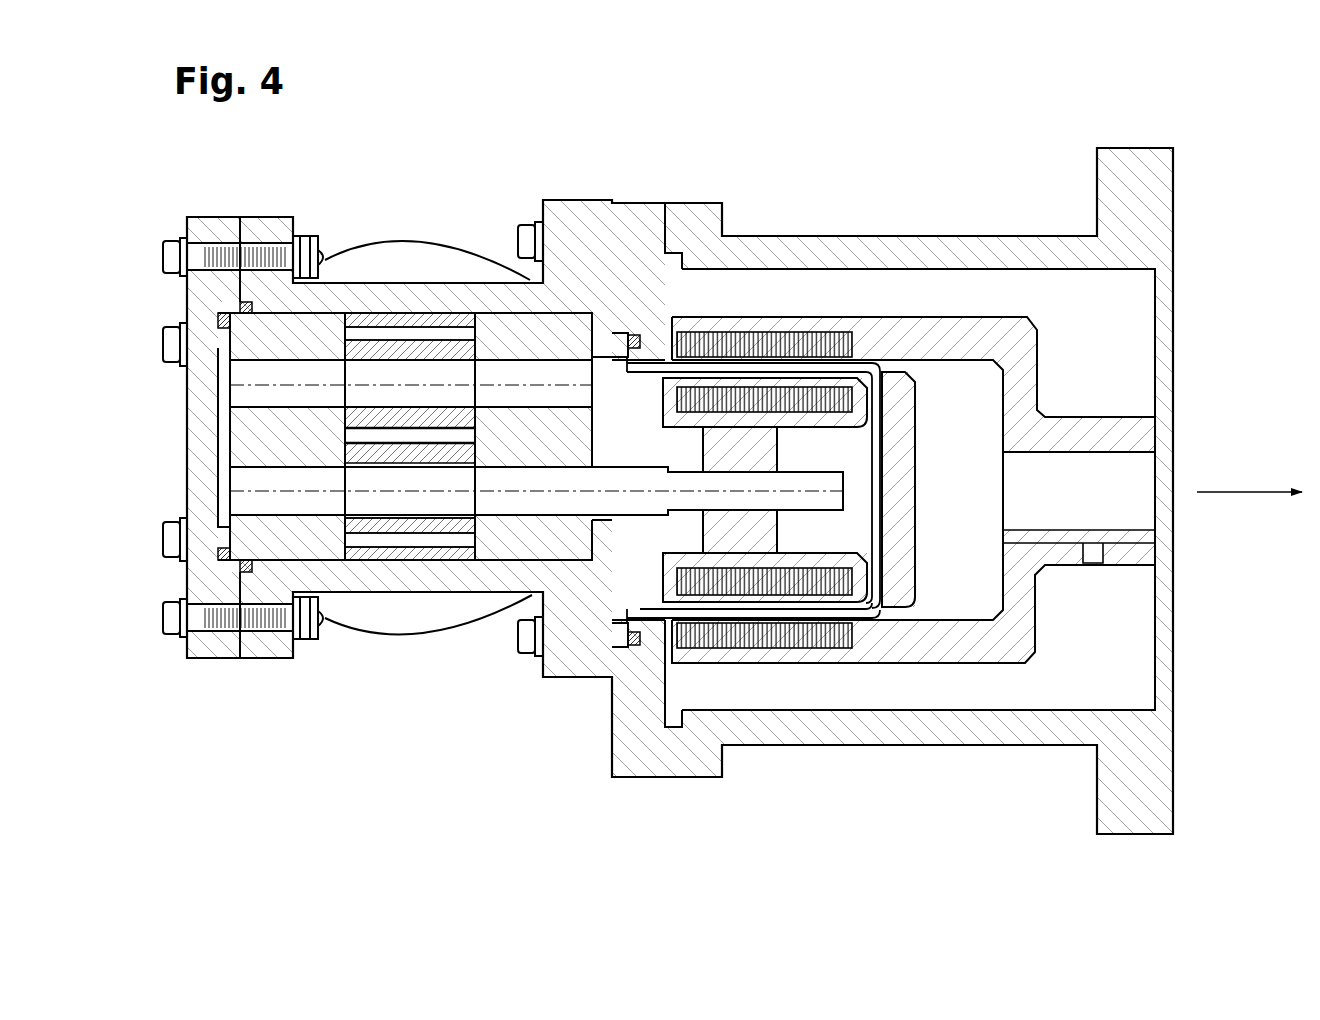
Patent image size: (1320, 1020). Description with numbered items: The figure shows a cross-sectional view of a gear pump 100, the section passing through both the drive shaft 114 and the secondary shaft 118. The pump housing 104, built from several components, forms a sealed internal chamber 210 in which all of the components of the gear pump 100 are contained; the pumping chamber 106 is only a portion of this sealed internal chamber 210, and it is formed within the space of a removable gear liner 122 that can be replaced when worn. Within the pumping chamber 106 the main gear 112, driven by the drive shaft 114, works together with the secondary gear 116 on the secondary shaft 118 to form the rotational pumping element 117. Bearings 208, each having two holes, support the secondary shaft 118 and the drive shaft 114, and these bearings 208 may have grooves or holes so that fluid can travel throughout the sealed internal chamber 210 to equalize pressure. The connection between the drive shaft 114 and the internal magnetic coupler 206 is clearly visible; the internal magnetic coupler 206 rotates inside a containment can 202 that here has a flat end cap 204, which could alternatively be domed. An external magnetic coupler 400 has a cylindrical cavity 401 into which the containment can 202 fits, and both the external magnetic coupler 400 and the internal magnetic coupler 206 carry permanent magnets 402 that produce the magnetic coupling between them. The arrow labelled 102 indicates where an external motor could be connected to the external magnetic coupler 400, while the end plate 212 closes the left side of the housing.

The gear pump 100 is at (970, 148).
The external motor 102 is at (1246, 491).
The pump housing 104 is at (222, 228).
The pumping chamber 106 is at (416, 332).
The main gear 112 is at (368, 527).
The drive shaft 114 is at (242, 490).
The secondary gear 116 is at (380, 347).
The rotational pumping element 117 is at (333, 440).
The secondary shaft 118 is at (243, 385).
The gear liner 122 is at (452, 322).
The containment can 202 is at (867, 370).
The end cap 204 is at (900, 495).
The internal magnetic coupler 206 is at (862, 581).
The bearings 208 is at (278, 537).
The sealed internal chamber 210 is at (225, 433).
The end plate 212 is at (200, 308).
The external magnetic coupler 400 is at (1037, 363).
The cylindrical cavity 401 is at (975, 380).
The permanent magnets 402 is at (727, 397).